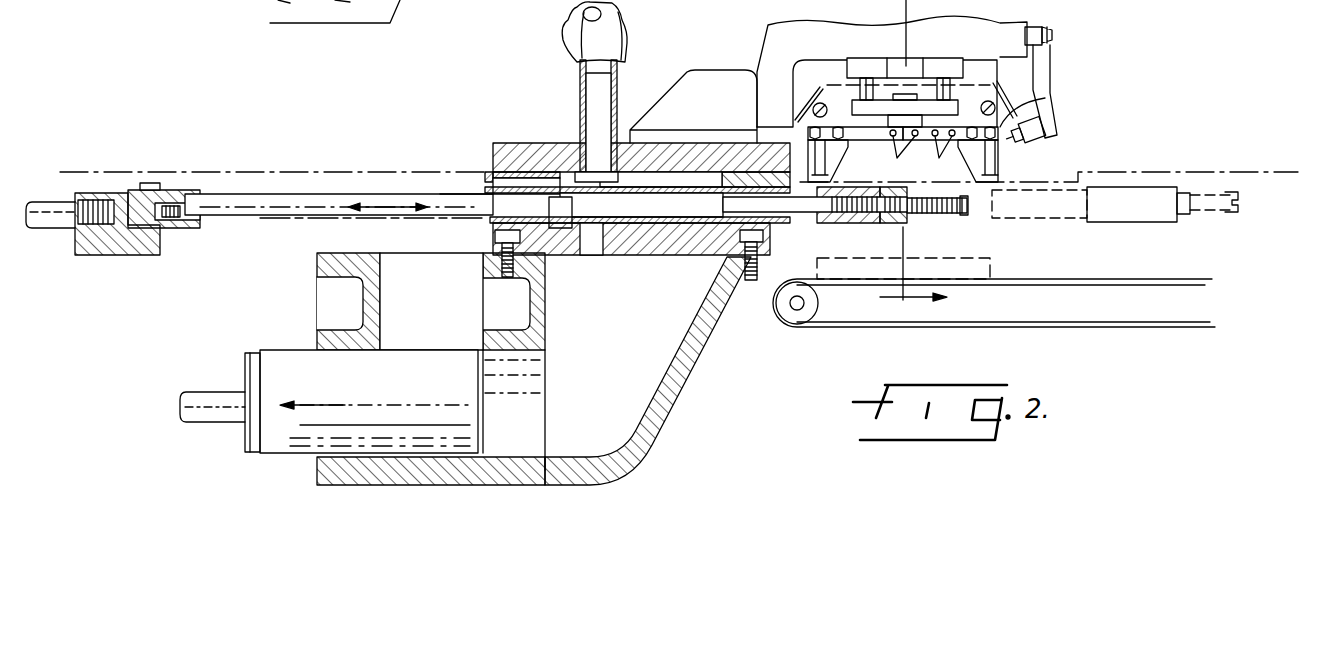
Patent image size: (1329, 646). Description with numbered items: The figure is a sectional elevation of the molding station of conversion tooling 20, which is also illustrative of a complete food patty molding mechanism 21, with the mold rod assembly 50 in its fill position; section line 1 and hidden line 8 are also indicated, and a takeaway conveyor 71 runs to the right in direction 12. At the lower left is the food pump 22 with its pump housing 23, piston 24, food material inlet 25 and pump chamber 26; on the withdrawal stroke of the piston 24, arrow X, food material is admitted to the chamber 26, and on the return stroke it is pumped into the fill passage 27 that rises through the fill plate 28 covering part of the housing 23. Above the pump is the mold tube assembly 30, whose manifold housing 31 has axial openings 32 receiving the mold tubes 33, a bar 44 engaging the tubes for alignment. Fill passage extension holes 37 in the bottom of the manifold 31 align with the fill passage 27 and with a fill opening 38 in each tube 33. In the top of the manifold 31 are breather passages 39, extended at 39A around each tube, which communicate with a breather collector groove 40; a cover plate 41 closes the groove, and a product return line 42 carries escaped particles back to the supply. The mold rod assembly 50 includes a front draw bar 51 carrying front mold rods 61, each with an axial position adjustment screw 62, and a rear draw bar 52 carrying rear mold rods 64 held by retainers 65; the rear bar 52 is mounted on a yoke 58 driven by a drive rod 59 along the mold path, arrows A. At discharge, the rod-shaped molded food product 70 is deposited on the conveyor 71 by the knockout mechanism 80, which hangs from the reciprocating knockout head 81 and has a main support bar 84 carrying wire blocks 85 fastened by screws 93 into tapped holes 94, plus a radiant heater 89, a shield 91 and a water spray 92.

The section line 1- 1 is at (48, 190).
The section line 8- 8 is at (767, 33).
The article / direction of conveyance 12 is at (895, 301).
The conversion tooling 20 is at (463, 184).
The food patty molding mechanism 21 is at (746, 307).
The food pump 22 is at (292, 334).
The pump housing 23 is at (320, 468).
The piston 24 is at (273, 368).
The food material inlet 25 is at (450, 275).
The pump chamber 26 is at (540, 397).
The fill passage 27 is at (587, 243).
The fill plate 28 is at (718, 250).
The mold tube assembly 30 is at (677, 171).
The manifold housing 31 is at (632, 240).
The axial openings 32 is at (783, 223).
The mold tubes 33 is at (650, 187).
The fill passage extension holes 37 is at (560, 238).
The fill opening 38 is at (558, 197).
The breather passages 39 is at (693, 187).
The breather passage extension 39A is at (657, 223).
The breather collector groove 40 is at (602, 172).
The cover plate 41 is at (500, 143).
The product return line 42 is at (580, 80).
The bar 44 is at (487, 188).
The mold rod assembly 50 is at (200, 174).
The front draw bar 51 is at (895, 223).
The rear draw bar 52 is at (182, 190).
The yoke 58 is at (143, 253).
The drive rod 59 is at (55, 223).
The front mold rods 61 is at (852, 212).
The axial position adjustment screw 62 is at (961, 193).
The rear mold rods 64 is at (307, 197).
The retainers 65 is at (177, 210).
The rod-shaped molded food product 70 is at (993, 270).
The takeaway conveyor 71 is at (1215, 318).
The knockout mechanism 80 is at (1050, 72).
The knockout head 81 is at (915, 60).
The main support bar 84 is at (875, 133).
The wire blocks 85 is at (1000, 165).
The stationary radiant heater 89 is at (822, 103).
The shield 91 is at (1032, 68).
The water spray 92 is at (1045, 138).
The screws 93 is at (1046, 98).
The tapped holes 94 is at (922, 140).
The mold path A is at (394, 212).
The piston withdrawal direction X is at (322, 400).